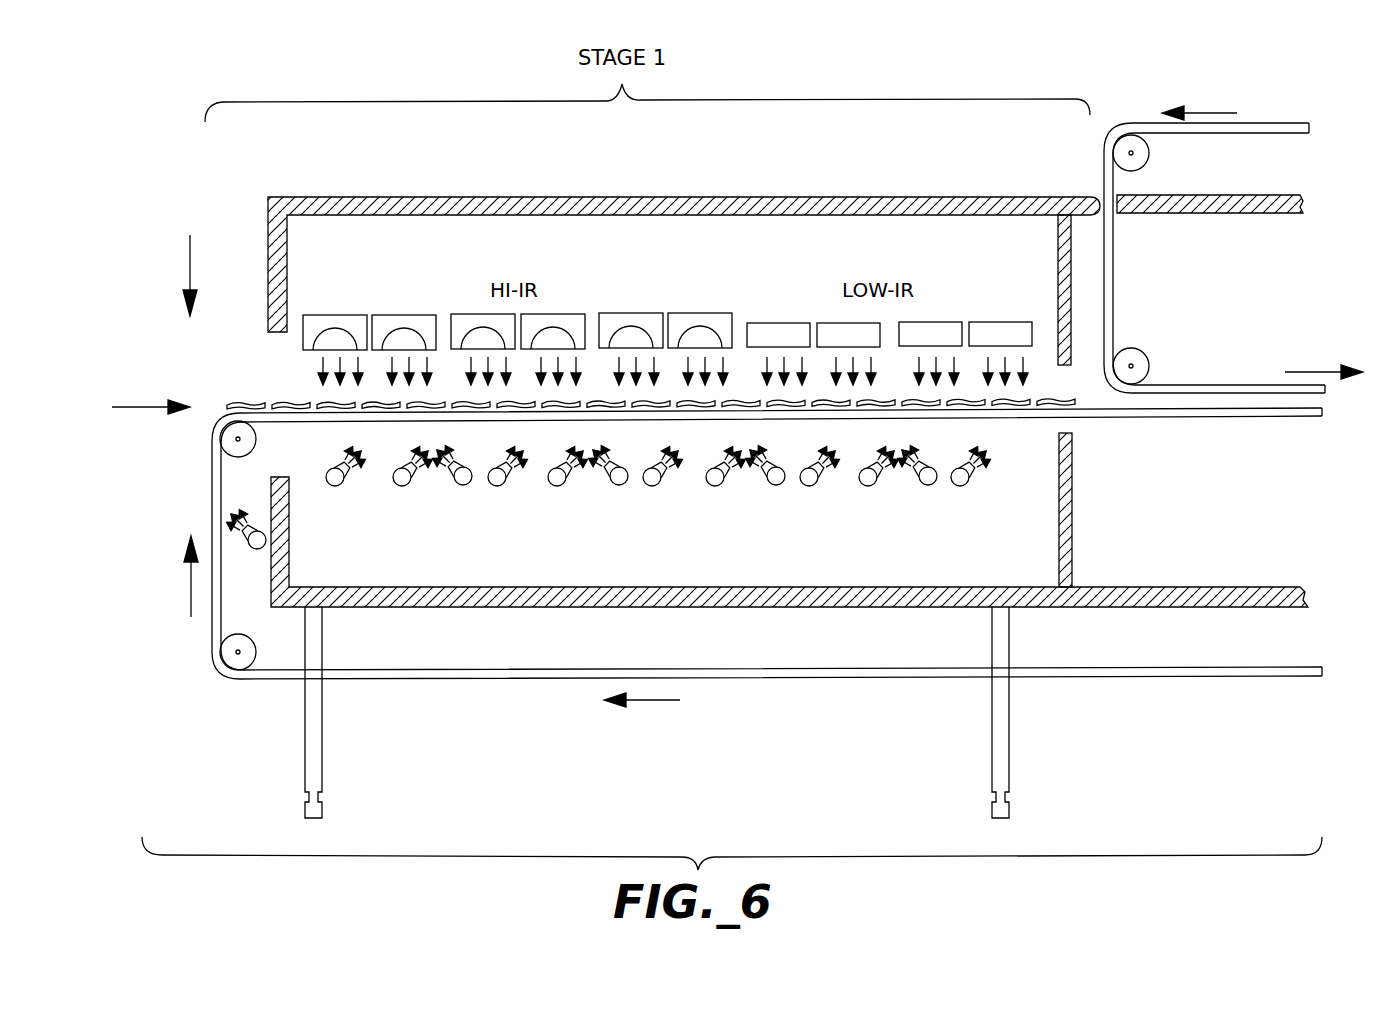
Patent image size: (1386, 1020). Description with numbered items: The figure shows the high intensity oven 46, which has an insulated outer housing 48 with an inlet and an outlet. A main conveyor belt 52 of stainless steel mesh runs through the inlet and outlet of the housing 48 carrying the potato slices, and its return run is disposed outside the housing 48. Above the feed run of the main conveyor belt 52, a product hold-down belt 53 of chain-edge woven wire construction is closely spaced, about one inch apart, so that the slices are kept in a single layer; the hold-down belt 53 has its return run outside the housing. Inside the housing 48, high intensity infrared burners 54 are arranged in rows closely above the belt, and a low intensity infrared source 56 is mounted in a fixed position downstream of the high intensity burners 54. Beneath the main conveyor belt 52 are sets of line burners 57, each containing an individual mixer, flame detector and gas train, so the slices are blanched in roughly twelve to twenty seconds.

The high intensity oven 46 is at (938, 217).
The insulated outer housing 48 is at (533, 607).
The main conveyor belt 52 is at (1083, 420).
The product hold-down belt 53 is at (1170, 133).
The high intensity infrared burners 54 is at (319, 314).
The low intensity infrared source 56 is at (771, 323).
The line burners 57 is at (557, 486).